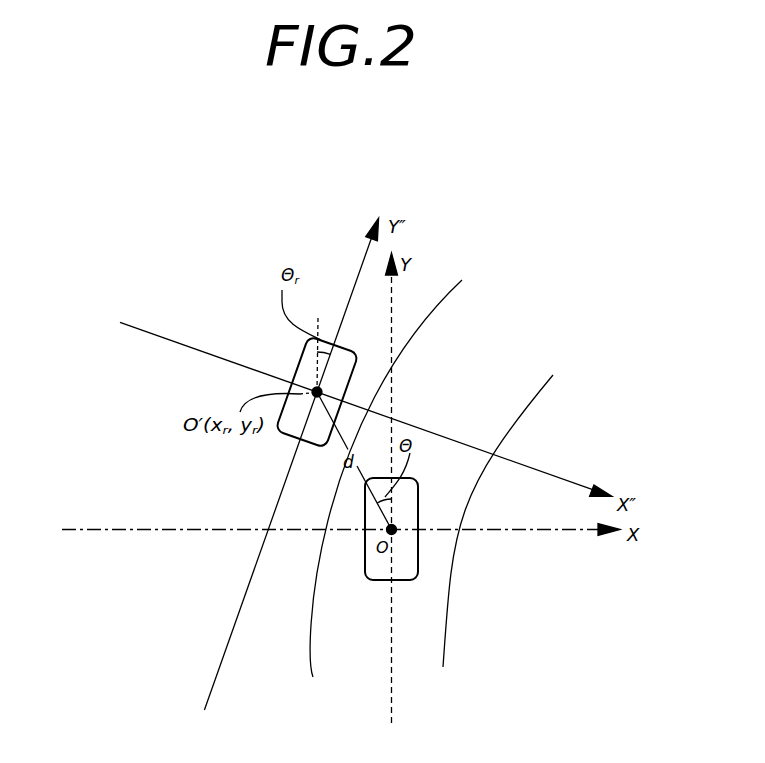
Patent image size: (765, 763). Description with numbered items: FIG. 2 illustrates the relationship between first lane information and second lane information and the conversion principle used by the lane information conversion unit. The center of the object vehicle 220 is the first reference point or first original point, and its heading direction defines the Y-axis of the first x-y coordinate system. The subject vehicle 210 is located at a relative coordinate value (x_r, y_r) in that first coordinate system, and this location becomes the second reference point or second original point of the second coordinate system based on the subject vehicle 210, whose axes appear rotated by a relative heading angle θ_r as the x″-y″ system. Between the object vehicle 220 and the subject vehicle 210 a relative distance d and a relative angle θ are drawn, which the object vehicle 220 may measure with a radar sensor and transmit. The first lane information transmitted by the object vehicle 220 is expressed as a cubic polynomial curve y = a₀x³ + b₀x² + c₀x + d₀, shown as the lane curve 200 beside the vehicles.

The lane curve (path polynomial) 200 is at (313, 640).
The subject vehicle 210 is at (298, 368).
The object vehicle 220 is at (418, 562).